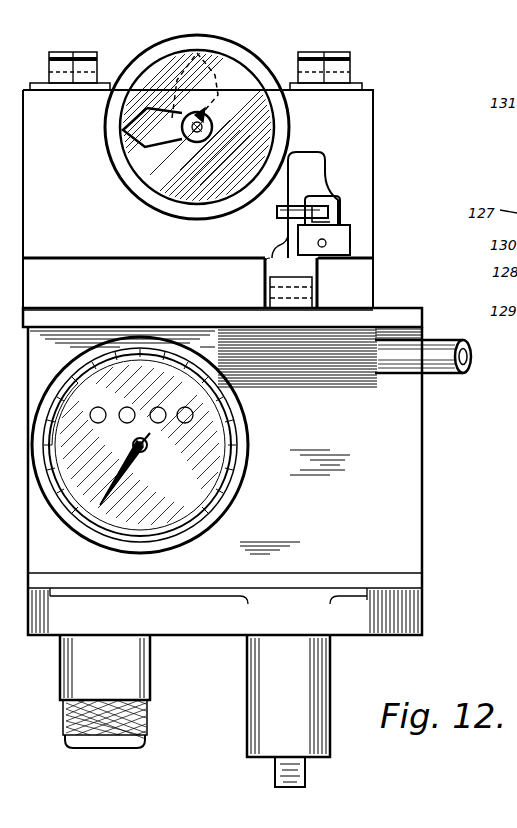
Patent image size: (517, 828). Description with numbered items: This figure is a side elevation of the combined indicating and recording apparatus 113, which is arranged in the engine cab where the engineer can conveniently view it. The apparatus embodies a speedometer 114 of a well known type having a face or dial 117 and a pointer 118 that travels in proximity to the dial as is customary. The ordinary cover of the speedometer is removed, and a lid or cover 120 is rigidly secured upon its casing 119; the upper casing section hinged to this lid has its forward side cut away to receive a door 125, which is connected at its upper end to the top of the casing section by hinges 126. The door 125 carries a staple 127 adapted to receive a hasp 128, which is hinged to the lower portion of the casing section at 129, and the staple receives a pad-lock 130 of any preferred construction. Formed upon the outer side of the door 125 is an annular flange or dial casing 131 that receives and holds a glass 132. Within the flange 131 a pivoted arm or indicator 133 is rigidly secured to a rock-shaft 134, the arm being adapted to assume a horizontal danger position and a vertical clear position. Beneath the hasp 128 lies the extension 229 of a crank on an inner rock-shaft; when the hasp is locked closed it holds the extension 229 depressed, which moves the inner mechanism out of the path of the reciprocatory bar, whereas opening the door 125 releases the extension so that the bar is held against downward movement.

The indicating and recording apparatus 113 is at (423, 485).
The speedometer 114 is at (193, 485).
The face or dial 117 is at (218, 443).
The pointer 118 is at (100, 512).
The casing 119 is at (400, 428).
The lid or cover 120 is at (405, 318).
The door 125 is at (347, 140).
The hinges 126 is at (343, 48).
The staple 127 is at (280, 213).
The hasp 128 is at (272, 245).
The hinge of hasp 129 is at (298, 292).
The pad-lock 130 is at (340, 239).
The annular flange or dial casing 131 is at (251, 63).
The glass 132 is at (170, 170).
The pivoted arm or indicator 133 is at (128, 128).
The rock-shaft 134 is at (212, 131).
The extension 229 is at (222, 240).